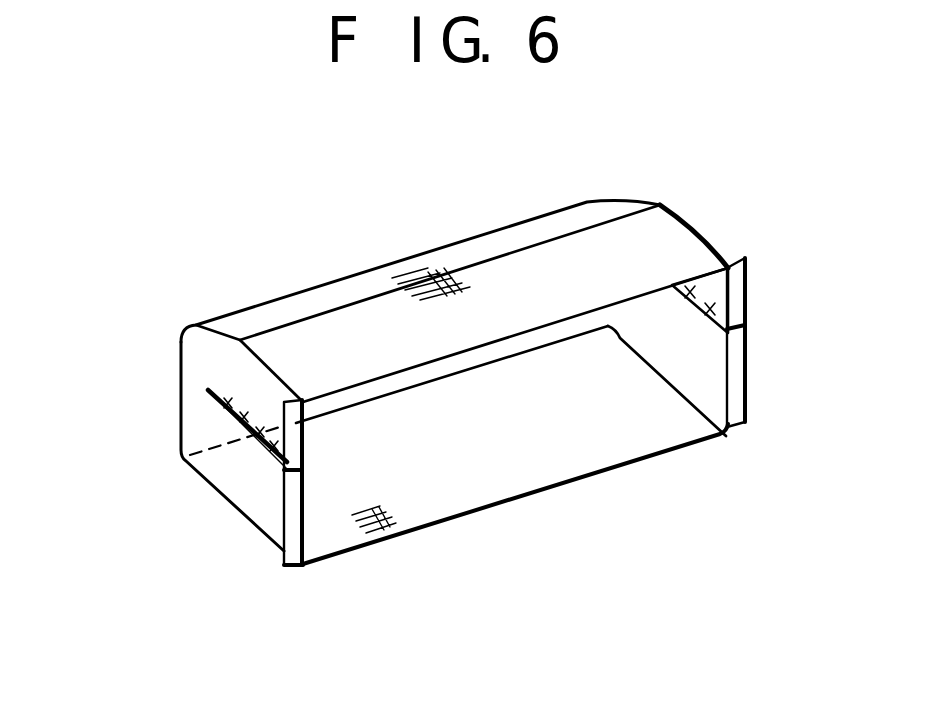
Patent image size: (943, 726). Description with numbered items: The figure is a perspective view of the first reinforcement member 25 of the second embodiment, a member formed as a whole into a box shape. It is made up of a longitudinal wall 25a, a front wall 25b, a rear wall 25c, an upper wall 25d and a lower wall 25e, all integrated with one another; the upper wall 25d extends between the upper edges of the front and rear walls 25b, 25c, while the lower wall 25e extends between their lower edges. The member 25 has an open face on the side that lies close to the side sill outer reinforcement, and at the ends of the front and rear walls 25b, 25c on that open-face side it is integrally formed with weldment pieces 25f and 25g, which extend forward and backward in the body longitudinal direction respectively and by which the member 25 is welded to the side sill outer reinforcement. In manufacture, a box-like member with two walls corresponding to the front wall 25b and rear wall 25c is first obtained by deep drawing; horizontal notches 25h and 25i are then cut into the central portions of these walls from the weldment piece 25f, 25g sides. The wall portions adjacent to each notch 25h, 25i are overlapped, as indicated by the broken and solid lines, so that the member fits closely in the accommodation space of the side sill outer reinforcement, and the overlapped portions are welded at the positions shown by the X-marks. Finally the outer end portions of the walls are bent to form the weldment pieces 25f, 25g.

The first reinforcement member 25 is at (338, 269).
The longitudinal wall 25a is at (395, 383).
The front wall 25b is at (240, 475).
The rear wall 25c is at (705, 370).
The upper wall 25d is at (522, 283).
The lower wall 25e is at (495, 452).
The weldment piece 25f is at (293, 515).
The weldment piece 25g is at (733, 364).
The horizontal notch 25h is at (240, 392).
The horizontal notch 25i is at (680, 307).